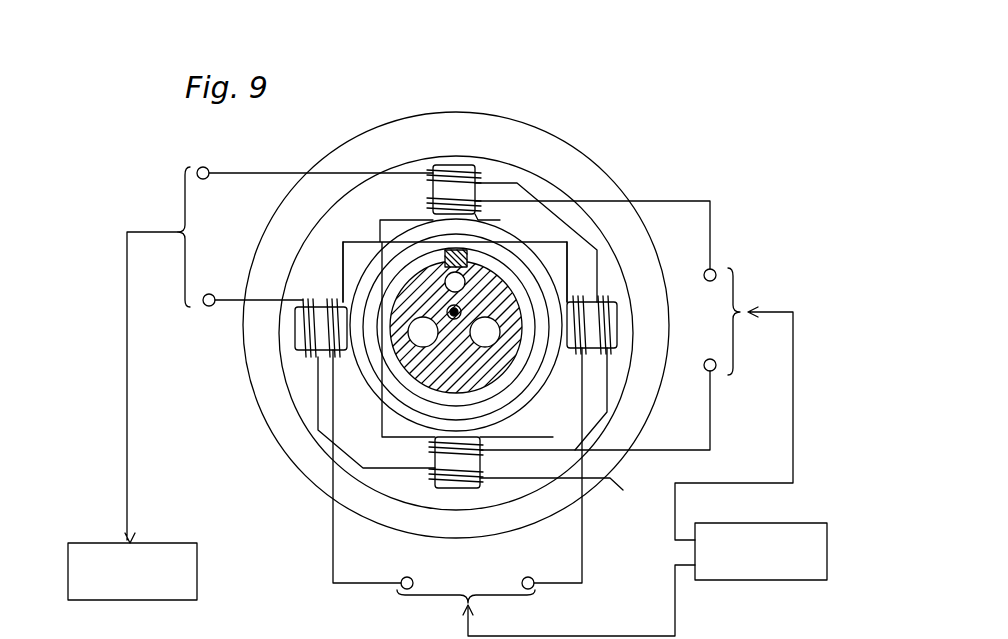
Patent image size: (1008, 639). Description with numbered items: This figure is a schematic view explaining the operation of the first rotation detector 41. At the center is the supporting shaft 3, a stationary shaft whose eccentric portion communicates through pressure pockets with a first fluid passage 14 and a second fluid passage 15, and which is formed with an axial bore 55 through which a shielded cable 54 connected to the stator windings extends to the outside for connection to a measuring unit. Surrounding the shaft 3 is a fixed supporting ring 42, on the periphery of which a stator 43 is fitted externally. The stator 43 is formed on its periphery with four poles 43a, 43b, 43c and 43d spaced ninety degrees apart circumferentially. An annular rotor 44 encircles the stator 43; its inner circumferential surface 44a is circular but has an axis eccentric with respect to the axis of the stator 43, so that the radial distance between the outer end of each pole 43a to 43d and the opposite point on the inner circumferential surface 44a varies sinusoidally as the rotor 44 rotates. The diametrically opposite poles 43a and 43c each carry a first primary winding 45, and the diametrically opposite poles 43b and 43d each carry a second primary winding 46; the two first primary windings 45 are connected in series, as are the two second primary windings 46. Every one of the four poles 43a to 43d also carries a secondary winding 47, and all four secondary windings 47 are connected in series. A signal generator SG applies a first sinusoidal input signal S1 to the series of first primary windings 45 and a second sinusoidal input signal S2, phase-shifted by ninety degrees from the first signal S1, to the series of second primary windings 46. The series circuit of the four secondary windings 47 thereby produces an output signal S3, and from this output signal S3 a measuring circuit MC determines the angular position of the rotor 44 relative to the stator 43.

The supporting shaft 3 is at (418, 373).
The first fluid passage 14 is at (415, 335).
The second fluid passage 15 is at (513, 387).
The first rotation detector 41 is at (562, 122).
The supporting ring 42 is at (495, 359).
The stator 43 is at (517, 183).
The pole 43a is at (457, 165).
The pole 43b is at (612, 350).
The pole 43c is at (445, 488).
The pole 43d is at (295, 323).
The annular rotor 44 is at (352, 140).
The inner circumferential surface 44a is at (293, 382).
The first primary winding 45 is at (477, 197).
The second primary winding 46 is at (337, 307).
The secondary winding 47 is at (437, 163).
The shielded cable 54 is at (450, 309).
The axial bore 55 is at (525, 258).
The measuring circuit MC is at (157, 543).
The signal generator SG is at (752, 523).
The first sinusoidal input signal S1 is at (795, 365).
The second sinusoidal input signal S2 is at (577, 636).
The output signal S3 is at (130, 408).